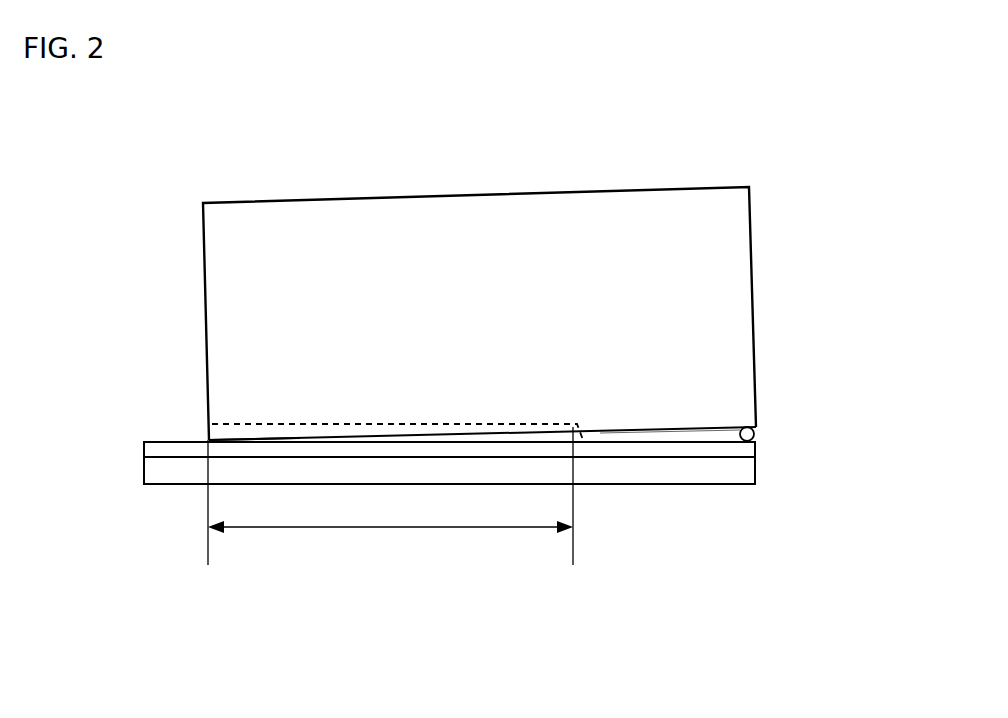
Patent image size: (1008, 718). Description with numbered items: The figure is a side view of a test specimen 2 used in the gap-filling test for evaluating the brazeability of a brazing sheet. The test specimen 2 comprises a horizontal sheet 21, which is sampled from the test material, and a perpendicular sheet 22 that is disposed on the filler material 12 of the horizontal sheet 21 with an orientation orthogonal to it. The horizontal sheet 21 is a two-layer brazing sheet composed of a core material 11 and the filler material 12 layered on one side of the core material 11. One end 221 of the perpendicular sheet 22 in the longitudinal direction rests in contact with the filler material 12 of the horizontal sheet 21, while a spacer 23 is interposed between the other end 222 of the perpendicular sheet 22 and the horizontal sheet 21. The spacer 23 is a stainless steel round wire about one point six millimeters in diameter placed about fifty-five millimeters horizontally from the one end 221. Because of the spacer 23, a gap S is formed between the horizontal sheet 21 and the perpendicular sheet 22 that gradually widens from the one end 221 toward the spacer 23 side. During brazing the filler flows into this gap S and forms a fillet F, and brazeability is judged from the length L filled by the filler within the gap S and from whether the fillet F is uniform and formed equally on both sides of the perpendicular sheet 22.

The test specimen 2 is at (723, 169).
The perpendicular sheet 22 is at (457, 237).
The one end of the perpendicular sheet 221 is at (205, 441).
The other end of the perpendicular sheet 222 is at (755, 425).
The spacer 23 is at (758, 436).
The horizontal sheet 21 is at (710, 472).
The core material 11 is at (600, 468).
The filler material 12 is at (653, 448).
The gap S is at (657, 433).
The fillet F is at (277, 423).
The length L is at (390, 496).